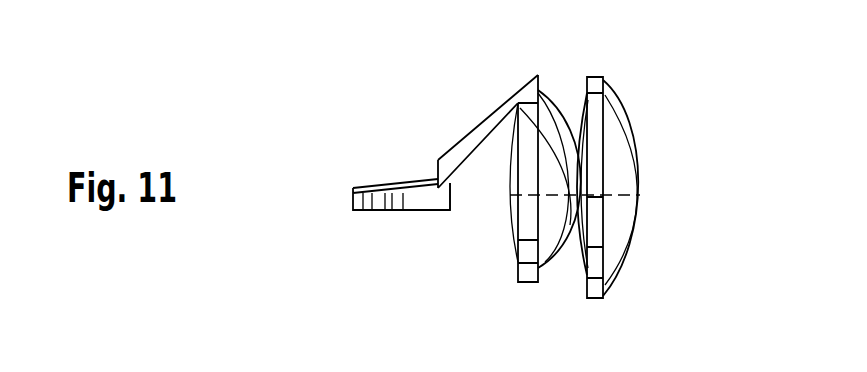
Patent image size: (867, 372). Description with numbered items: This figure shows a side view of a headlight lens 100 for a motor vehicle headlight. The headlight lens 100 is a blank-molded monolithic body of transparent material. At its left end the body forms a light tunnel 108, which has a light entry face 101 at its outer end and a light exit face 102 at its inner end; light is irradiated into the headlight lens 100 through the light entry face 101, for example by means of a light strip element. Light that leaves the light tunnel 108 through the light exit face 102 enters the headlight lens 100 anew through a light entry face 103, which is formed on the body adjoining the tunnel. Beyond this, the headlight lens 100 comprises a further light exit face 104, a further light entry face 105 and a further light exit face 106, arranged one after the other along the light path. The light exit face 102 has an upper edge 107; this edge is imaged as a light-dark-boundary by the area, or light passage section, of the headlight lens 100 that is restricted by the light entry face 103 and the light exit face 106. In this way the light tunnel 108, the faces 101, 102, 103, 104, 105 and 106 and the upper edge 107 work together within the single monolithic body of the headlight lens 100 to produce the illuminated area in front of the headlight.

The headlight lens 100 is at (652, 254).
The light entry face 101 is at (352, 197).
The light exit face 102 is at (462, 192).
The light entry face 103 is at (517, 258).
The further light exit face 104 is at (556, 266).
The further light entry face 105 is at (581, 110).
The further light exit face 106 is at (627, 117).
The upper edge 107 is at (451, 212).
The light tunnel 108 is at (384, 197).